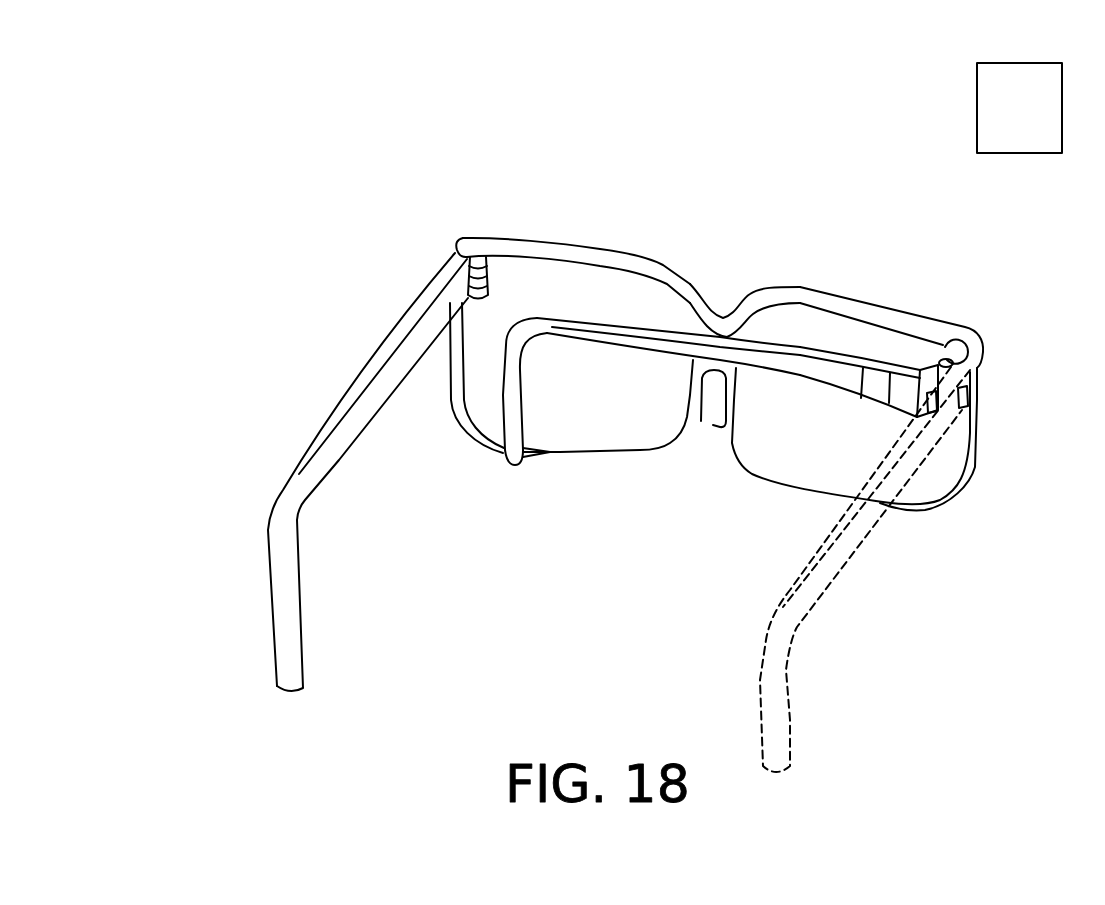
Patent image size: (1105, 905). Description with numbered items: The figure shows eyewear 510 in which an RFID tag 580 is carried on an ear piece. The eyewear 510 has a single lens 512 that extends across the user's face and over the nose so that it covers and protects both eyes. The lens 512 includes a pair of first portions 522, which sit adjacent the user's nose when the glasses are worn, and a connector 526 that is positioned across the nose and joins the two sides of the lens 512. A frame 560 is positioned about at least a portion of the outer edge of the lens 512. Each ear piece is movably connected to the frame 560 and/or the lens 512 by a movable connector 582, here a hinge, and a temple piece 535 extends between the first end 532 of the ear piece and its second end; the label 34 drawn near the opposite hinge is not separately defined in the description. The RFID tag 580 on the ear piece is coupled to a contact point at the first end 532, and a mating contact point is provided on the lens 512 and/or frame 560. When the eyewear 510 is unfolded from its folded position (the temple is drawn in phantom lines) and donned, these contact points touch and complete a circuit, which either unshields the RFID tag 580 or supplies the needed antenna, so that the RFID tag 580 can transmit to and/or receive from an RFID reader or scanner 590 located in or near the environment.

The eyewear 510 is at (505, 176).
The lens 512 is at (571, 290).
The first portion 522 is at (680, 312).
The connector 526 is at (725, 318).
The first end 532 is at (877, 363).
The temple piece 535 is at (767, 362).
The frame 560 is at (665, 265).
The RFID tag 580 is at (872, 388).
The movable connector 582 is at (482, 262).
The RFID reader or scanner 590 is at (1020, 55).
The lens element 34 is at (600, 146).